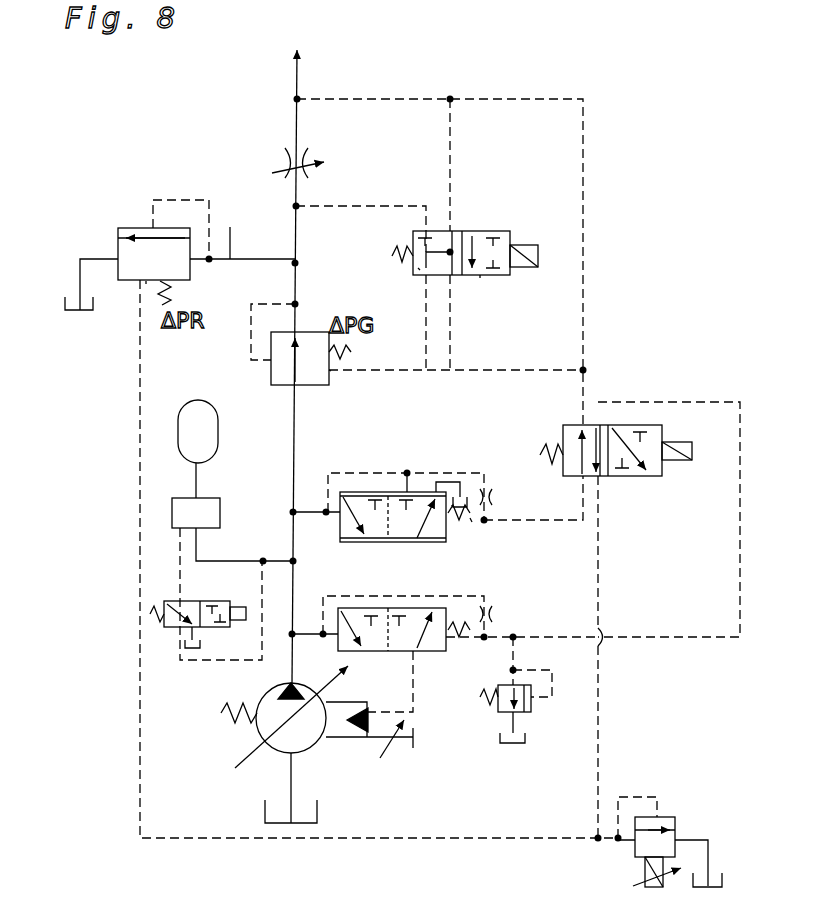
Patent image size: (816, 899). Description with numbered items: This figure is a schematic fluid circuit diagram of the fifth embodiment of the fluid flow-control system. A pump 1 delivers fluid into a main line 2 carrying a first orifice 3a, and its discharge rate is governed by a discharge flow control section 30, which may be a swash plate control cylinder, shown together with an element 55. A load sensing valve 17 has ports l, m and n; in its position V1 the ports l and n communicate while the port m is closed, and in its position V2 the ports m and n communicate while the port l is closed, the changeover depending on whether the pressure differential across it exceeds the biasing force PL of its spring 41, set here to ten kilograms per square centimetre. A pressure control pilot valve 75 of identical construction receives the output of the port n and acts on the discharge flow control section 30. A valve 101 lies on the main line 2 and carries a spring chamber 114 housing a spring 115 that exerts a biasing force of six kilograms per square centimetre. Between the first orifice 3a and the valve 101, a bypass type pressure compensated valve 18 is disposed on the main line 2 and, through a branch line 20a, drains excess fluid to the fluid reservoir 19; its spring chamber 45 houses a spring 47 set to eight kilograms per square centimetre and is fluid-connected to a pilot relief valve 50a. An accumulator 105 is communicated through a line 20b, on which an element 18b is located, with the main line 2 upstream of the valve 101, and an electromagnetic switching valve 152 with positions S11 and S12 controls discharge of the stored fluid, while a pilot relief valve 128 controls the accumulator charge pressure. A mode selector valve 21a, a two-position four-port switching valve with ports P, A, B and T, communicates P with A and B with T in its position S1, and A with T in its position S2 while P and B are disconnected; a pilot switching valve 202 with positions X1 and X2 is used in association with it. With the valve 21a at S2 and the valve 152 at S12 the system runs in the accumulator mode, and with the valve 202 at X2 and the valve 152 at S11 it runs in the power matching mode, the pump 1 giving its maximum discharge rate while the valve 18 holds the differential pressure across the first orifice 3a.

The pump 1 is at (256, 736).
The main line 2 is at (296, 232).
The first orifice 3a is at (268, 152).
The load sensing valve 17 is at (362, 489).
The by-pass type pressure compensated valve 18 is at (108, 220).
The pressure sensor / filter block 18b is at (224, 506).
The fluid reservoir 19 is at (68, 300).
The branch line 20a is at (230, 227).
The line 20b is at (238, 561).
The mode selector valve 21a is at (634, 482).
The discharge flow control section 30 is at (341, 738).
The spring 41 is at (472, 524).
The spring chamber 45 is at (146, 283).
The spring 47 is at (173, 291).
The pilot relief valve 50a is at (680, 815).
The adjustable stop 55 is at (406, 758).
The pressure control pilot valve 75 is at (352, 606).
The valve 101 is at (272, 386).
The accumulator 105 is at (206, 396).
The spring chamber 114 is at (330, 370).
The spring 115 is at (345, 353).
The pilot relief valve 128 is at (536, 722).
The electromagnetic switching valve 152 is at (168, 632).
The pilot switching valve 202 is at (494, 226).
The position of pilot switching valve X1 is at (418, 270).
The position of pilot switching valve X2 is at (480, 278).
The position of mode selector valve S1 is at (563, 450).
The position of mode selector valve S2 is at (656, 442).
The position of switching valve S11 is at (172, 604).
The position of switching valve S12 is at (236, 590).
The port A is at (582, 430).
The port B is at (600, 425).
The port P is at (583, 488).
The port T is at (600, 478).
The biasing force Δ PL is at (472, 530).
The position of load sensing valve V1 is at (356, 544).
The position of load sensing valve V2 is at (440, 544).
The port l is at (407, 472).
The port m is at (436, 482).
The port n is at (414, 542).